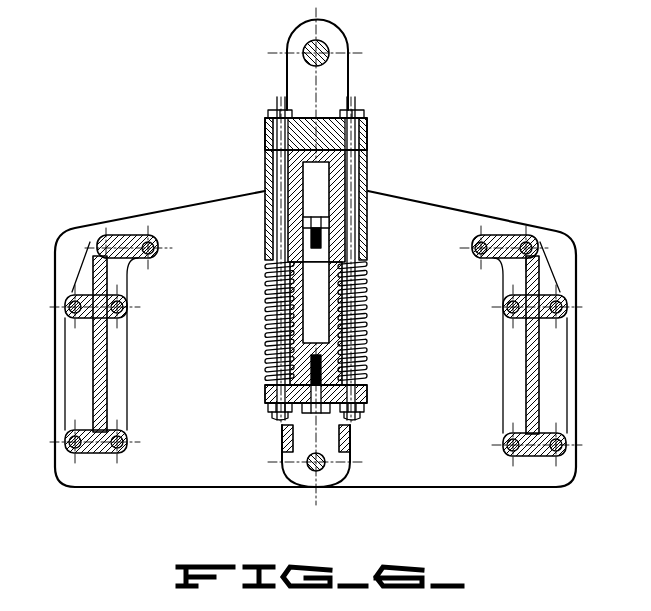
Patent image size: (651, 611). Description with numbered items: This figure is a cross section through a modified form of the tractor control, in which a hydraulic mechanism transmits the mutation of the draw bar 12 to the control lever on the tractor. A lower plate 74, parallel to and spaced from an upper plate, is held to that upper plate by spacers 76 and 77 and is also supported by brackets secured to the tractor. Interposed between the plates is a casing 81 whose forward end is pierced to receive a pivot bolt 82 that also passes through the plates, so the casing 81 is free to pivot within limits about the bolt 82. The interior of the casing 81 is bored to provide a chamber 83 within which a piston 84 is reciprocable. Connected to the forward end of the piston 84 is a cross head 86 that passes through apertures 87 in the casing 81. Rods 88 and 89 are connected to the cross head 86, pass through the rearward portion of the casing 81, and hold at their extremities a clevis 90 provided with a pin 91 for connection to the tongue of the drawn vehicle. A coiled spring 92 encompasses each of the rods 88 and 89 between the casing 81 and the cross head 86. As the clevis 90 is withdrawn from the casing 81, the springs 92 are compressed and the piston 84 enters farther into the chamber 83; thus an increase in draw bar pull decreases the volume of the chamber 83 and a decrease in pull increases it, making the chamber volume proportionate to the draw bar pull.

The draw bar 12 is at (263, 191).
The lower plate 74 is at (213, 471).
The spacer 76 is at (75, 368).
The spacer 77 is at (543, 372).
The casing 81 is at (367, 221).
The pivot bolt 82 is at (345, 468).
The chamber 83 is at (323, 179).
The piston 84 is at (322, 297).
The cross head 86 is at (368, 395).
The apertures 87 is at (278, 421).
The rod 88 is at (272, 243).
The rod 89 is at (352, 243).
The clevis 90 is at (337, 90).
The pin 91 is at (322, 50).
The coiled spring 92 is at (266, 327).